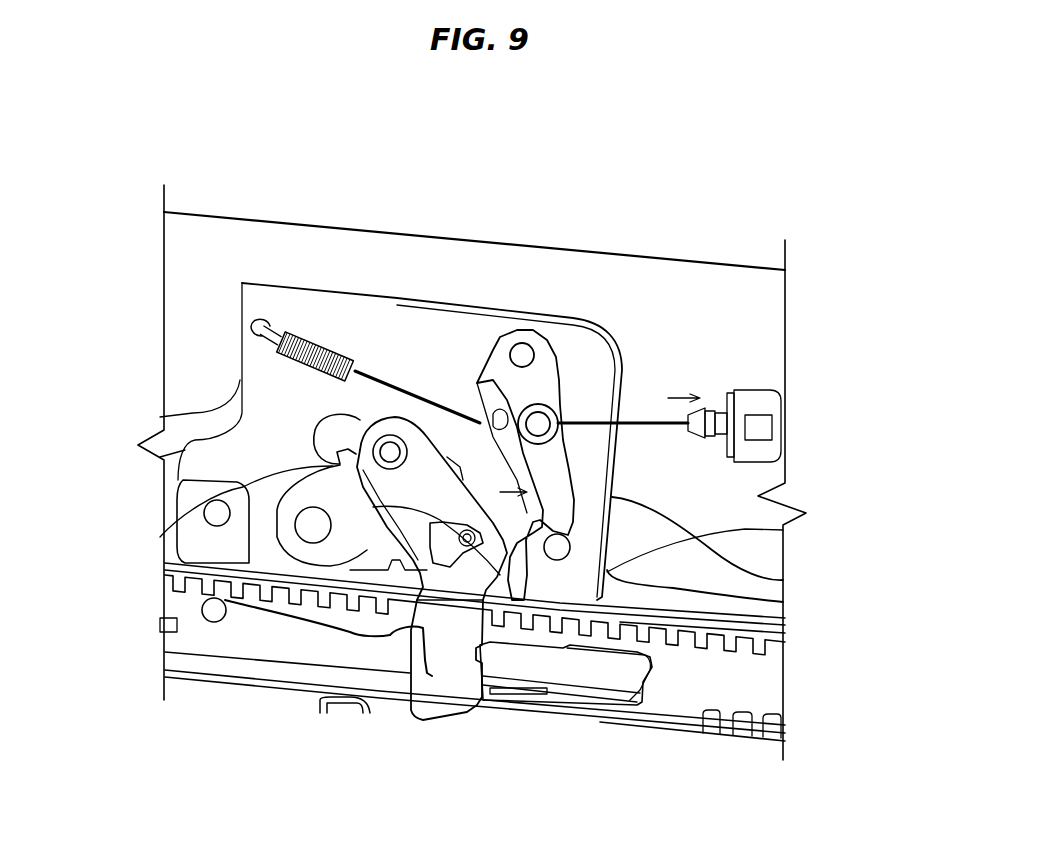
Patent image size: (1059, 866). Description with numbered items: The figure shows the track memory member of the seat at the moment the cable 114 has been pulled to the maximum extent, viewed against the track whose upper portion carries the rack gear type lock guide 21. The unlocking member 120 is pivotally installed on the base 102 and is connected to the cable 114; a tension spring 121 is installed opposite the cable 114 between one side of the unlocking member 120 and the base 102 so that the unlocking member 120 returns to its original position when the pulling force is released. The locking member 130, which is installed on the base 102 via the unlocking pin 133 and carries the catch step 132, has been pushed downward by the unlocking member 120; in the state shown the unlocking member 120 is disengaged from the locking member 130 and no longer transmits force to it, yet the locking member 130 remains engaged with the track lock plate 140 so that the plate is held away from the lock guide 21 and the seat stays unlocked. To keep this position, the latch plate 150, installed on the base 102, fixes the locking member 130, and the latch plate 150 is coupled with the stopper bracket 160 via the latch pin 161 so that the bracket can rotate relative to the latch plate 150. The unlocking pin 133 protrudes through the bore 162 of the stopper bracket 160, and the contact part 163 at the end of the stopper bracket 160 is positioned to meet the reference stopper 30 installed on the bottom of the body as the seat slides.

The lock guide 21 is at (747, 647).
The reference stopper 30 is at (348, 703).
The base 102 is at (475, 380).
The cable 114 is at (651, 413).
The unlocking member 120 is at (550, 463).
The tension spring 121 is at (313, 367).
The locking member 130 is at (355, 592).
The catch step 132 is at (222, 502).
The unlocking pin 133 is at (760, 537).
The track lock plate 140 is at (583, 673).
The latch plate 150 is at (352, 425).
The stopper bracket 160 is at (350, 557).
The latch pin 161 is at (390, 450).
The bore 162 is at (203, 610).
The contact part 163 is at (442, 708).